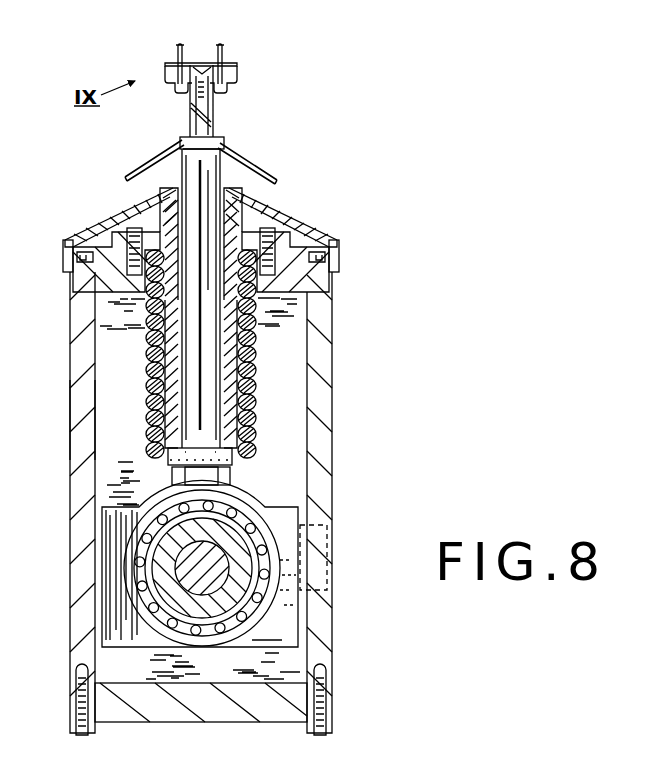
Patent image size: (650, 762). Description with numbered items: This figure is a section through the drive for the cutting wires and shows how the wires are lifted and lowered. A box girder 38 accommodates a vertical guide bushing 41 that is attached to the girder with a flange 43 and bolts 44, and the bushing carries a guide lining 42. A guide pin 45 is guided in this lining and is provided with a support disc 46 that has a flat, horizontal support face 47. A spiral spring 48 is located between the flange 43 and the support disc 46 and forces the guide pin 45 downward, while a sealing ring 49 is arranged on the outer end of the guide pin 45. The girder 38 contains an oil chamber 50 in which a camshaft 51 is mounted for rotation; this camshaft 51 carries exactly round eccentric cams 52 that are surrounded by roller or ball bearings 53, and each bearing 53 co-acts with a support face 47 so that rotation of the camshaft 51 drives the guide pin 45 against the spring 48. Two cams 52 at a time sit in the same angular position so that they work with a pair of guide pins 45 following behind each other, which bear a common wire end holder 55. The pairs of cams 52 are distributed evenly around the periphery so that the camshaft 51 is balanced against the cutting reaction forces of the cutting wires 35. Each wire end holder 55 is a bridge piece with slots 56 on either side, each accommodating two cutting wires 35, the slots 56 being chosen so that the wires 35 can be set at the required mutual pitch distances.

The cutting wire 35 is at (216, 52).
The box girder 38 is at (333, 437).
The vertical guide bushing 41 is at (322, 293).
The guide lining 42 is at (262, 238).
The flange 43 is at (290, 257).
The bolt 44 is at (338, 240).
The guide pin 45 is at (256, 398).
The support disc 46 is at (234, 464).
The support face 47 is at (232, 484).
The spiral spring 48 is at (258, 345).
The sealing ring 49 is at (252, 193).
The oil chamber 50 is at (115, 383).
The camshaft 51 is at (262, 585).
The eccentric cam 52 is at (284, 556).
The roller or ball bearing 53 is at (280, 522).
The wire end holder 55 is at (237, 82).
The slot 56 is at (235, 67).